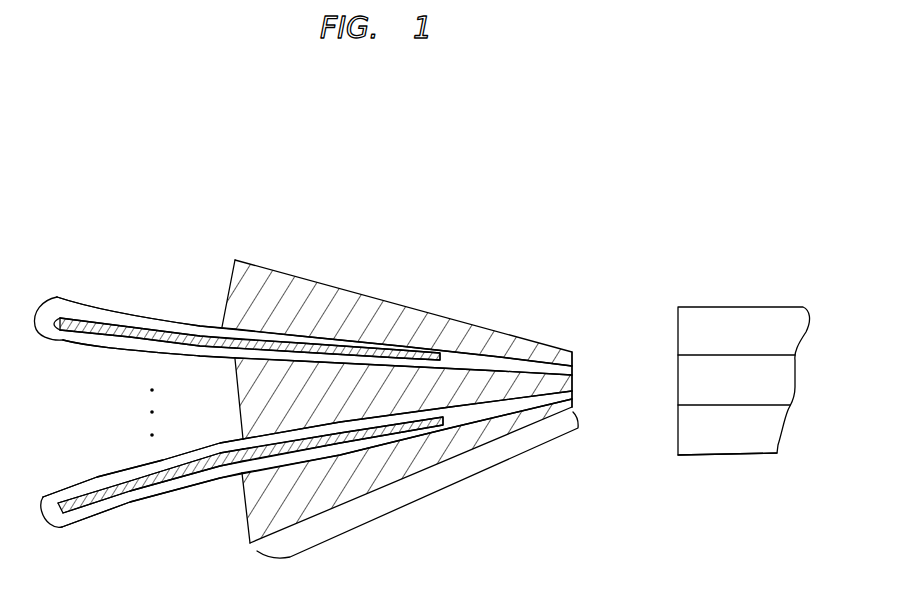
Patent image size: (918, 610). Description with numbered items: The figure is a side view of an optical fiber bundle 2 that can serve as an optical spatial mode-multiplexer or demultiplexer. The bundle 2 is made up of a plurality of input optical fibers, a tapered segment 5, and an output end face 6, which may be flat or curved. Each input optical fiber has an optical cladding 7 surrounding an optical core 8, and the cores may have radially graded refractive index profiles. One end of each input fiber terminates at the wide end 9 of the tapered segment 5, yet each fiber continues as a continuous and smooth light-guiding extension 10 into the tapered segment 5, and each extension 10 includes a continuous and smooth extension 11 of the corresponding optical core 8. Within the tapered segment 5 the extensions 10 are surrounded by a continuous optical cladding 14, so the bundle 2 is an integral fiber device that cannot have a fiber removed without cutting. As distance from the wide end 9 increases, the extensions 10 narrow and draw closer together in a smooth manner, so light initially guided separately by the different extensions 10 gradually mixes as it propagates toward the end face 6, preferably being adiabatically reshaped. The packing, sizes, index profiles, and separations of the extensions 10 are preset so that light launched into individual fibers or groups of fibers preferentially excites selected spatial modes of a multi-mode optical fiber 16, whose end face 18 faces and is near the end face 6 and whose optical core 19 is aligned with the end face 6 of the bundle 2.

The optical fiber bundle 2 is at (617, 186).
The tapered segment 5 is at (442, 489).
The output end face 6 is at (588, 362).
The optical cladding 7 is at (98, 356).
The optical core 8 is at (70, 335).
The wide end 9 is at (212, 272).
The light-guiding extension 10 is at (283, 333).
The extension of the optical core 11 is at (397, 352).
The continuous optical cladding 14 is at (343, 321).
The multi-mode optical fiber 16 is at (748, 306).
The end face 18 is at (657, 432).
The optical core 19 is at (738, 389).